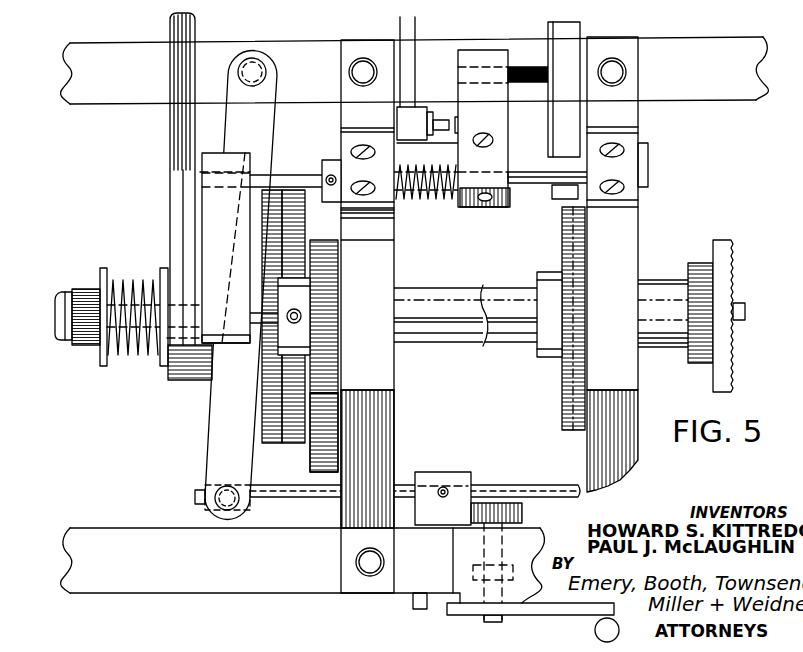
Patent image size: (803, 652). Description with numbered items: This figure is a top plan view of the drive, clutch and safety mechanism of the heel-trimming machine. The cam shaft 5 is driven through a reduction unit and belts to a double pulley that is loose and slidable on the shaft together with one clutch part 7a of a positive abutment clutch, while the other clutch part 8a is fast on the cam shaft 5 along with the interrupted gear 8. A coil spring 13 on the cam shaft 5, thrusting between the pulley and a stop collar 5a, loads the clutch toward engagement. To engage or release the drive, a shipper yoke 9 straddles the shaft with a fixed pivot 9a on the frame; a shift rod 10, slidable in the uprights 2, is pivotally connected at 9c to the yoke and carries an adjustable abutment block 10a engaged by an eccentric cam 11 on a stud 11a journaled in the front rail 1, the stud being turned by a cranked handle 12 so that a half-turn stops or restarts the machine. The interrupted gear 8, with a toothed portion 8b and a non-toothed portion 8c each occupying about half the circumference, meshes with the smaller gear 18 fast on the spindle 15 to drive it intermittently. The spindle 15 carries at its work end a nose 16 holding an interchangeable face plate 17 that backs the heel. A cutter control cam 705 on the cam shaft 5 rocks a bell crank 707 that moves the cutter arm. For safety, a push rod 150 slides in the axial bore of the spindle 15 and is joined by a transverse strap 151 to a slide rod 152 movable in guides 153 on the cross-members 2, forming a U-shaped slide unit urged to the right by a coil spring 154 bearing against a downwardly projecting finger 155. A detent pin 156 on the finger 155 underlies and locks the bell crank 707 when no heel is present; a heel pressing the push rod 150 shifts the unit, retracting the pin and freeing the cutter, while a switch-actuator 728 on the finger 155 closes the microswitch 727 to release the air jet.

The front rail 1 is at (720, 45).
The uprights 2 is at (394, 253).
The cam shaft 5 is at (60, 300).
The stop collar 5a is at (100, 362).
The pulley section of clutch unit 7a is at (271, 447).
The interrupted gear 8 is at (325, 481).
The clutch part 8a is at (293, 446).
The toothed portion 8b is at (332, 418).
The non-toothed portion 8c is at (328, 218).
The shipper yoke 9 is at (220, 418).
The fixed pivot 9a is at (252, 70).
The pivotal connection 9c is at (214, 500).
The shift rod 10 is at (521, 486).
The adjustable abutment block 10a is at (427, 473).
The eccentric cam 11 is at (524, 513).
The stud 11a is at (492, 620).
The cranked handle 12 is at (580, 613).
The coil spring 13 is at (135, 358).
The spindle 15 is at (470, 336).
The nose 16 is at (697, 366).
The face plate 17 is at (735, 376).
The smaller gear 18 is at (325, 305).
The push rod 150 is at (190, 358).
The transverse strap 151 is at (210, 232).
The slide rod 152 is at (283, 173).
The guides 153 is at (345, 147).
The coil spring 154 is at (420, 200).
The finger 155 is at (487, 50).
The detent pin 156 is at (523, 75).
The cutter control cam 705 is at (568, 368).
The bell crank 707 is at (578, 40).
The microswitch 727 is at (415, 108).
The switch-actuator 728 is at (481, 126).